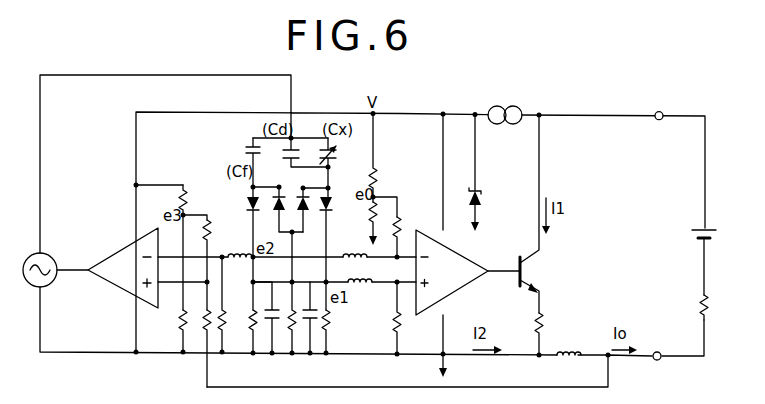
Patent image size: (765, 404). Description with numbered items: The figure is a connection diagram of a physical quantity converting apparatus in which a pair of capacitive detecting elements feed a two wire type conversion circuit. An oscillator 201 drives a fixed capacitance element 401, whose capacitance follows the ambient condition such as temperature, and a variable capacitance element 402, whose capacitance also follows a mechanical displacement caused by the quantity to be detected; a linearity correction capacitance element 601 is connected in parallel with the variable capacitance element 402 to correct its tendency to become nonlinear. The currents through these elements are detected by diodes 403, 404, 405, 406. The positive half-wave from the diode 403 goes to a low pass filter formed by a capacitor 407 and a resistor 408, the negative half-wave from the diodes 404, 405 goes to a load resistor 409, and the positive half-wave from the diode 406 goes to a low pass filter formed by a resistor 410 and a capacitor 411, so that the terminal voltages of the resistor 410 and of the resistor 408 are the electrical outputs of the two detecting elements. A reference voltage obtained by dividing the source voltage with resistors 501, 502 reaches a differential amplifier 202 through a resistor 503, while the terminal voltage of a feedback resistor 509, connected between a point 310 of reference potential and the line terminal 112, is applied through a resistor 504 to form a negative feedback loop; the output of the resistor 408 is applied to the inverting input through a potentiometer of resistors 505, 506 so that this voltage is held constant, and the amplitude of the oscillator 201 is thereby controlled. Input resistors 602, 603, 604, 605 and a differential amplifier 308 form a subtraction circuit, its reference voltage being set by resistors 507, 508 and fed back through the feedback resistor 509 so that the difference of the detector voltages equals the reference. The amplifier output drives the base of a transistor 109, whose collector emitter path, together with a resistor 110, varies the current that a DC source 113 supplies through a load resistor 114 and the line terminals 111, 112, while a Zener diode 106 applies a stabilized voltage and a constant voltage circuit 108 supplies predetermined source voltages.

The Zener diode 106 is at (490, 172).
The constant voltage circuit 108 is at (507, 104).
The transistor 109 is at (528, 214).
The resistor 110 is at (554, 335).
The line terminal 111 is at (659, 107).
The line terminal 112 is at (659, 369).
The DC source 113 is at (719, 234).
The load resistor 114 is at (719, 307).
The oscillator 201 is at (55, 266).
The differential amplifier 202 is at (123, 268).
The differential amplifier 308 is at (452, 234).
The point of reference potential 310 is at (459, 367).
The fixed capacitance element 401 is at (244, 162).
The variable capacitance element 402 is at (344, 167).
The diode 403 is at (253, 248).
The diode 404 is at (278, 209).
The diode 405 is at (303, 211).
The diode 406 is at (341, 253).
The capacitor 407 is at (276, 292).
The resistor 408 is at (256, 321).
The load resistor 409 is at (283, 338).
The resistor 410 is at (343, 333).
The capacitor 411 is at (302, 292).
The resistor 501 is at (198, 244).
The resistor 502 is at (168, 332).
The resistor 503 is at (222, 265).
The resistor 504 is at (201, 336).
The resistor 505 is at (242, 248).
The resistor 506 is at (228, 318).
The resistor 507 is at (389, 158).
The resistor 508 is at (381, 215).
The feedback resistor 509 is at (577, 345).
The linearity correction capacitance element 601 is at (292, 153).
The input resistor 602 is at (354, 247).
The input resistor 603 is at (366, 294).
The input resistor 604 is at (404, 224).
The input resistor 605 is at (413, 319).